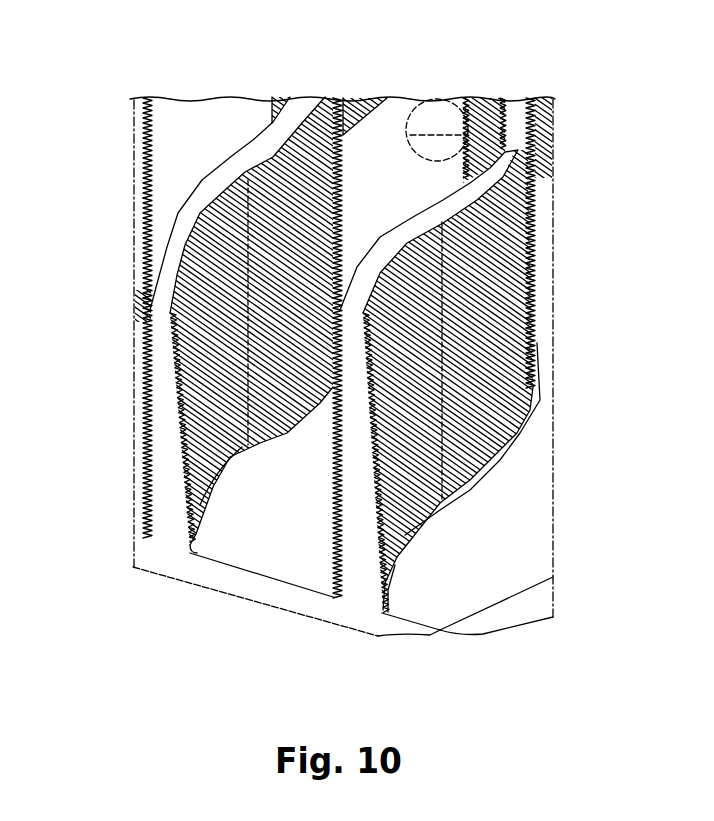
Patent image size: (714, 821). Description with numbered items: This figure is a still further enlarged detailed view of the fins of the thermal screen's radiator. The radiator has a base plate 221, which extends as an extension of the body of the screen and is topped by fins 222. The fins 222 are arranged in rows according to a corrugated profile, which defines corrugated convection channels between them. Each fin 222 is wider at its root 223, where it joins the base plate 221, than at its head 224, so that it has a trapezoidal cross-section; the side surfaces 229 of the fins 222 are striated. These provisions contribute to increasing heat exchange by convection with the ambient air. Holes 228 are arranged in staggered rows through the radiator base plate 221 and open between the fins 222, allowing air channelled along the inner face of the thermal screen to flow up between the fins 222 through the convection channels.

The base plate 221 is at (258, 588).
The fins 222 is at (208, 186).
The root 223 is at (168, 548).
The head 224 is at (150, 300).
The holes 228 is at (443, 117).
The side surfaces 229 is at (470, 423).